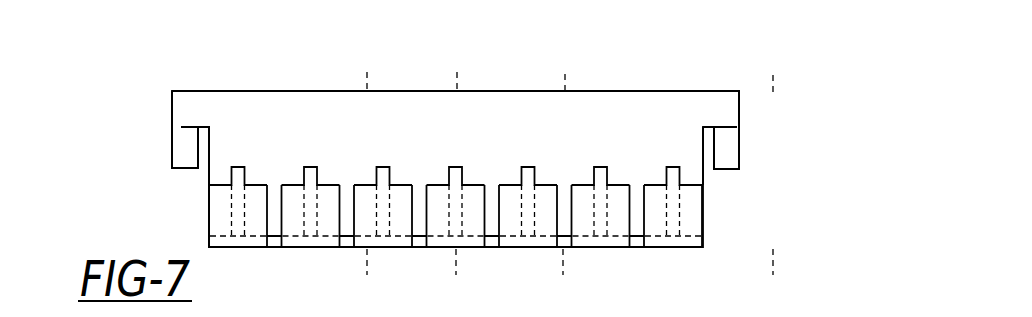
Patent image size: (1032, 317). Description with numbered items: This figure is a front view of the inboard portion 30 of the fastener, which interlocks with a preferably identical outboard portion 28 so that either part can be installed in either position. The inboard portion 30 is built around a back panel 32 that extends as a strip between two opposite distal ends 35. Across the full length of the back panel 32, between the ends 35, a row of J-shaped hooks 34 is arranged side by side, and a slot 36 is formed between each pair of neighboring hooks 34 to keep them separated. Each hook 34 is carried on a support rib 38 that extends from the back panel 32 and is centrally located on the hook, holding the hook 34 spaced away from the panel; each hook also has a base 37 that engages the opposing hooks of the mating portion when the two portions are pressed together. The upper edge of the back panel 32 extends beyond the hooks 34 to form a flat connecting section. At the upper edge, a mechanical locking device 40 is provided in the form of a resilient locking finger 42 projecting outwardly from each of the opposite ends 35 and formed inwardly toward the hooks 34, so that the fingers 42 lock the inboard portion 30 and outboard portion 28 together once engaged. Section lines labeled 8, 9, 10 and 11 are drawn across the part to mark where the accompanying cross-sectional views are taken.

The outboard portion 28 is at (270, 107).
The inboard portion 30 is at (205, 91).
The back panel 32 is at (632, 117).
The J-shaped hook 34 is at (440, 197).
The distal end 35 is at (208, 197).
The slot 36 is at (637, 200).
The base 37 is at (298, 248).
The support rib 38 is at (311, 172).
The mechanical locking device 40 is at (150, 150).
The resilient locking finger 42 is at (180, 137).
The section line 8- 8 is at (773, 275).
The section line 9- 9 is at (563, 275).
The section line 10- 10 is at (456, 275).
The section line 11- 11 is at (328, 47).